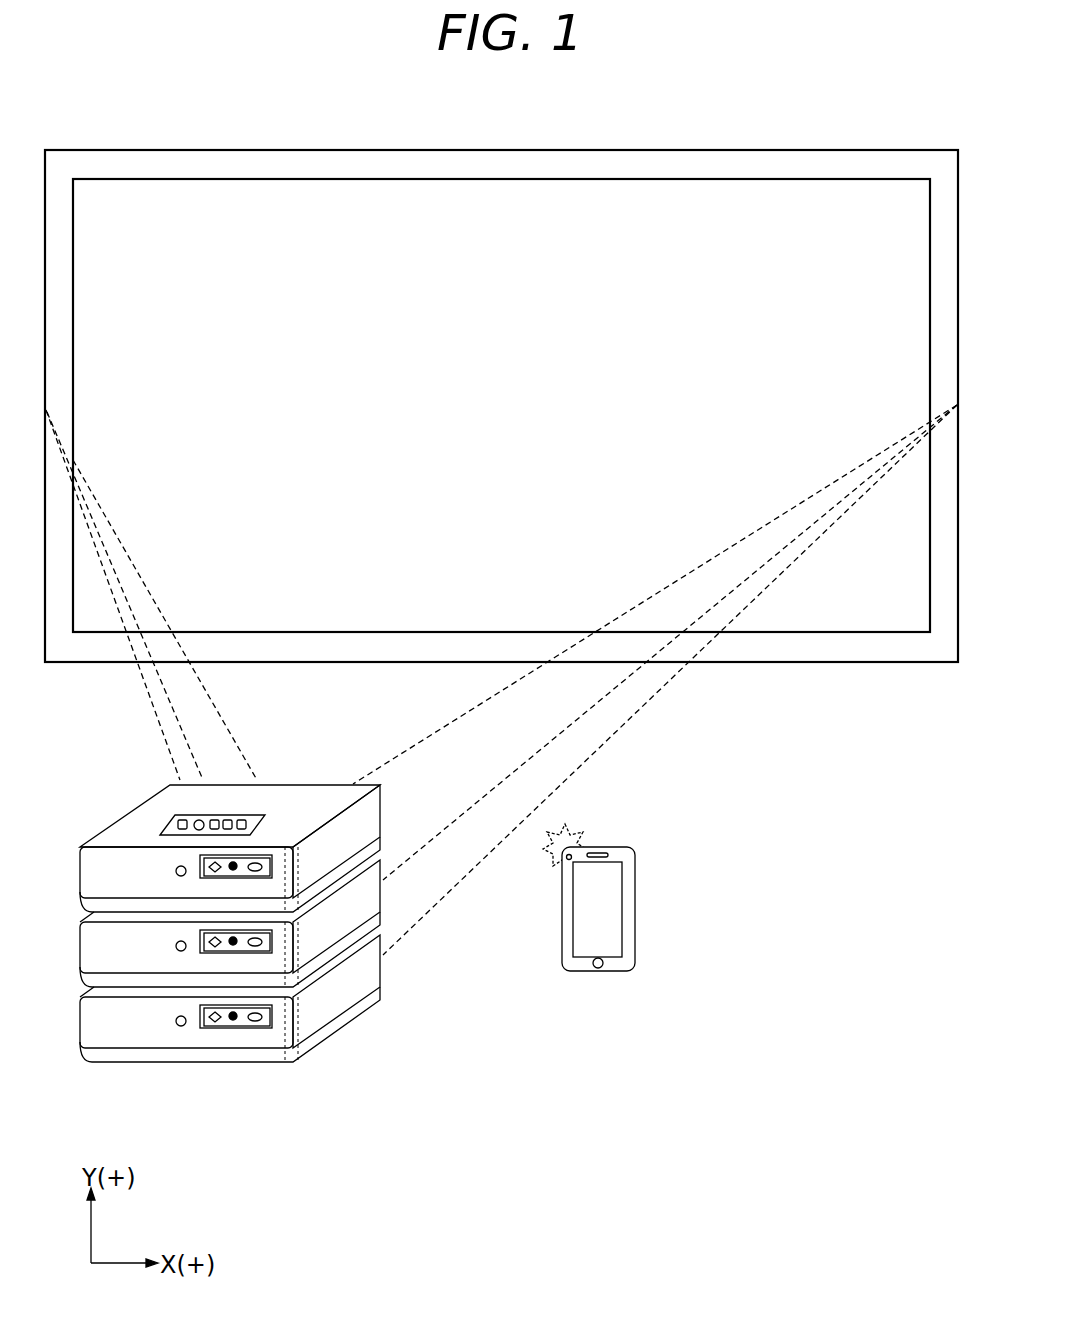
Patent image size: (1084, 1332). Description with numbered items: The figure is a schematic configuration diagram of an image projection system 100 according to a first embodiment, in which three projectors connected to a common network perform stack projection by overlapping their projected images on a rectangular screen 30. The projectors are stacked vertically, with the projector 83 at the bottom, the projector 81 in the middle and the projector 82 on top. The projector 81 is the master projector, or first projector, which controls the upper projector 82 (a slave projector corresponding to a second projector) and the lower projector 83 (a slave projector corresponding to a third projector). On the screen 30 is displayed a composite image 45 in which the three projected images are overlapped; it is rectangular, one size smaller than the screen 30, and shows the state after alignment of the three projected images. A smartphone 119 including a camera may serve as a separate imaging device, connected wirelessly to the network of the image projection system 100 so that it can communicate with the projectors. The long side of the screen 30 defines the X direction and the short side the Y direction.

The screen 30 is at (908, 150).
The composite image 45 is at (850, 179).
The projector 81 is at (383, 890).
The projector 82 is at (383, 818).
The projector 83 is at (383, 970).
The image projection system 100 is at (622, 809).
The smartphone 119 is at (635, 878).